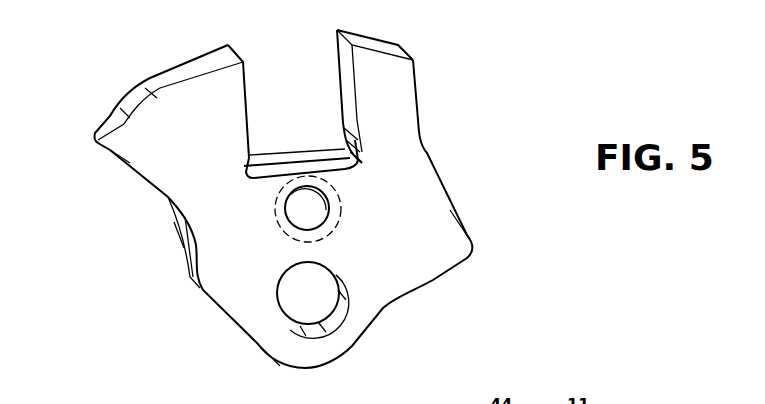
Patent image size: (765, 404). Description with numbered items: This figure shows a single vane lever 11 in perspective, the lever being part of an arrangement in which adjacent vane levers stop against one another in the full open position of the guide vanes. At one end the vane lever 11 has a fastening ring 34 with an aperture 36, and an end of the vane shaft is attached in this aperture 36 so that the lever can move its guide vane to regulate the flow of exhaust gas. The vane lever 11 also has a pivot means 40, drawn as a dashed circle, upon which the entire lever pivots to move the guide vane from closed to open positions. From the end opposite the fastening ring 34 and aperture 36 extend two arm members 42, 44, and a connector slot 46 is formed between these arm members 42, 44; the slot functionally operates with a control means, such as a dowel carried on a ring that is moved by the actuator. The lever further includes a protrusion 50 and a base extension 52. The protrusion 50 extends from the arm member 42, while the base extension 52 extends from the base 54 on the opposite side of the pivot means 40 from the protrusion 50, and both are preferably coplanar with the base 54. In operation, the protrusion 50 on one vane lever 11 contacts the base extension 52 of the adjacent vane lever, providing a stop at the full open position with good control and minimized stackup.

The vane lever 11 is at (210, 250).
The fastening ring 34 is at (313, 355).
The aperture 36 is at (347, 297).
The pivot means 40 is at (295, 198).
The arm member 42 is at (222, 85).
The arm member 44 is at (397, 100).
The connector slot 46 is at (300, 100).
The protrusion 50 is at (118, 150).
The base extension 52 is at (445, 237).
The base 54 is at (272, 338).